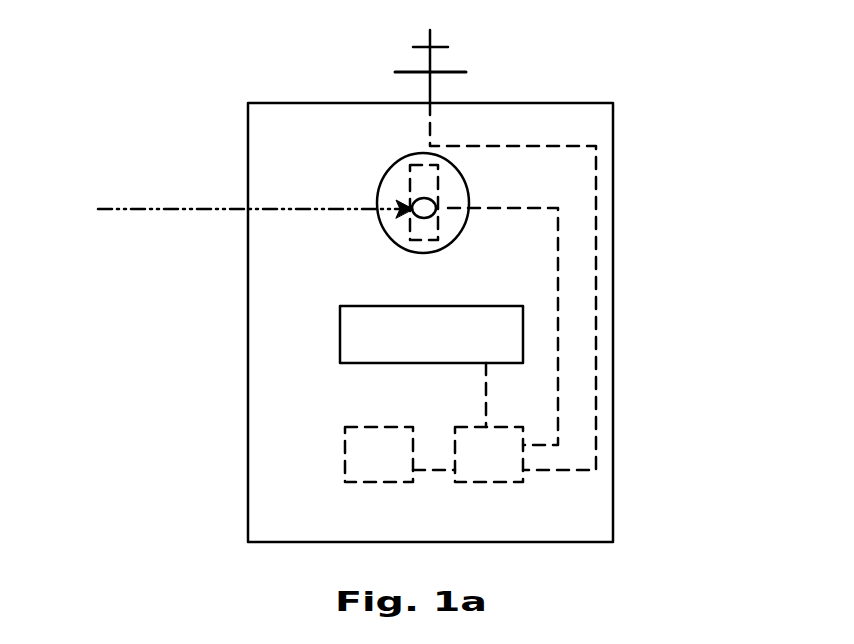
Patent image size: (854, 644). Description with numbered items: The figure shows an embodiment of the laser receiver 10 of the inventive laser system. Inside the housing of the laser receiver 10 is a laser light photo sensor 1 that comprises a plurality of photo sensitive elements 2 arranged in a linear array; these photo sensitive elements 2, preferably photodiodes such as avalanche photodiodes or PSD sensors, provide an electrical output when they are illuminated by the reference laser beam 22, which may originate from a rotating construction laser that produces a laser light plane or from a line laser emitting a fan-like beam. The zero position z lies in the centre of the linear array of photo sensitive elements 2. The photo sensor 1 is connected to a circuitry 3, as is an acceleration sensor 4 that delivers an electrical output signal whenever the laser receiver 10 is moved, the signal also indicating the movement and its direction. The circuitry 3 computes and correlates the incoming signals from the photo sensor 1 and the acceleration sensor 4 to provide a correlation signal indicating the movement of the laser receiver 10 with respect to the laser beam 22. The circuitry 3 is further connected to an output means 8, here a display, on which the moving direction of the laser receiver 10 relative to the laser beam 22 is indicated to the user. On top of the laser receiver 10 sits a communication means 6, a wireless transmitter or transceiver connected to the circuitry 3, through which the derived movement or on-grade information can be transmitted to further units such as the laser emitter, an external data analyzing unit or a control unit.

The laser receiver 10 is at (229, 383).
The communication means 6 is at (413, 71).
The laser light photo sensor 1 is at (377, 232).
The photo sensitive elements 2 is at (412, 182).
The zero position z is at (428, 209).
The reference laser beam 22 is at (143, 212).
The output means 8 is at (428, 351).
The acceleration sensor 4 is at (358, 444).
The circuitry 3 is at (503, 469).